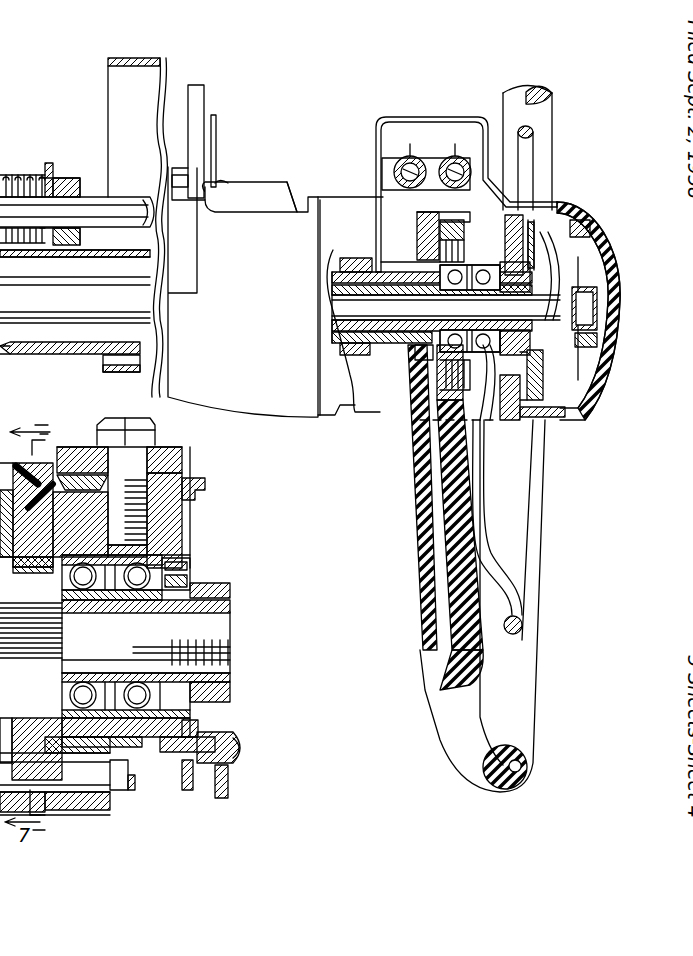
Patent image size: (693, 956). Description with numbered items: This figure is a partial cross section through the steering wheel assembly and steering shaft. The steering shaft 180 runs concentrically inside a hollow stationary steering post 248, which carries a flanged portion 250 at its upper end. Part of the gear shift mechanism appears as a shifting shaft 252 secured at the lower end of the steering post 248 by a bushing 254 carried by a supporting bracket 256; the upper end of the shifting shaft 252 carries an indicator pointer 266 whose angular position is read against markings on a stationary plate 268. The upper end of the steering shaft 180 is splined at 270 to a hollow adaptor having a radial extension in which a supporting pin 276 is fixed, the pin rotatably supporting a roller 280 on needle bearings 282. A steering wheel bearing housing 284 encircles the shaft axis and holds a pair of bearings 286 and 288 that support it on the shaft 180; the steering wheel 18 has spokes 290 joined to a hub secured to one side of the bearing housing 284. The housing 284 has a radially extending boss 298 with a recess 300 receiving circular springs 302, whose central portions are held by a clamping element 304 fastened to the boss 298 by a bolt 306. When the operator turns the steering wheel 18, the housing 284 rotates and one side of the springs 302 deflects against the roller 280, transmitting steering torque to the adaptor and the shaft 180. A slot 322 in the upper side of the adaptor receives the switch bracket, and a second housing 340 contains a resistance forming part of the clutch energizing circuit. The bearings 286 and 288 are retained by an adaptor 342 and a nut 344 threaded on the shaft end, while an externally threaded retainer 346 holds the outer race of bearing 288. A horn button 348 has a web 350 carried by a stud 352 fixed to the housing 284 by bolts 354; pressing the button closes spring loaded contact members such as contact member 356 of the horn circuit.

The steering wheel 18 is at (503, 793).
The steering shaft 180 is at (75, 300).
The steering post 248 is at (45, 352).
The flanged portion 250 is at (258, 382).
The shifting shaft 252 is at (77, 212).
The bushing 254 is at (68, 182).
The supporting bracket 256 is at (46, 170).
The indicator pointer 266 is at (217, 152).
The stationary plate 268 is at (205, 92).
The splines 270 is at (418, 296).
The supporting pin 276 is at (76, 795).
The roller 280 is at (95, 826).
The needle bearings 282 is at (108, 795).
The steering wheel bearing housing 284 is at (515, 365).
The bearing 286 is at (90, 615).
The bearing 288 is at (128, 612).
The spokes 290 is at (410, 532).
The boss 298 is at (183, 480).
The recess 300 is at (117, 507).
The circular springs 302 is at (85, 455).
The clamping element 304 is at (162, 450).
The bolt 306 is at (133, 410).
The slot 322 is at (383, 267).
The second housing 340 is at (462, 158).
The adaptor 342 is at (190, 578).
The nut 344 is at (231, 590).
The retainer 346 is at (185, 560).
The horn button 348 is at (566, 205).
The web 350 is at (556, 205).
The stud 352 is at (222, 725).
The bolts 354 is at (250, 748).
The contact member 356 is at (545, 422).